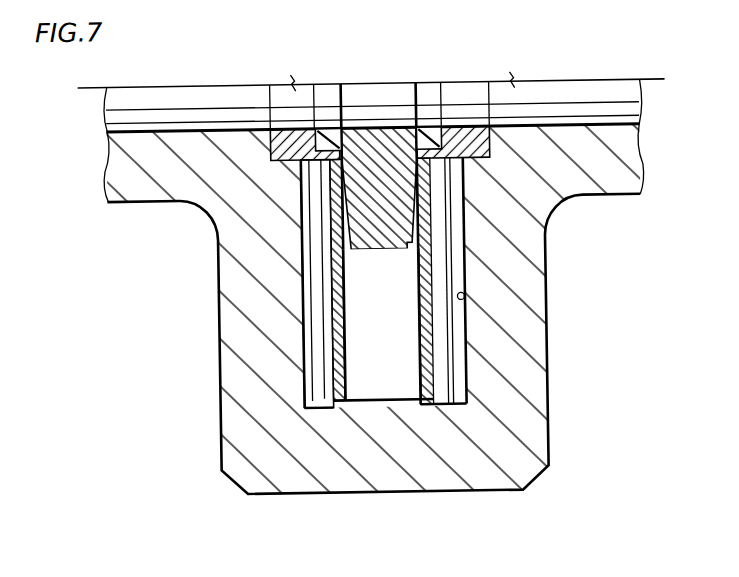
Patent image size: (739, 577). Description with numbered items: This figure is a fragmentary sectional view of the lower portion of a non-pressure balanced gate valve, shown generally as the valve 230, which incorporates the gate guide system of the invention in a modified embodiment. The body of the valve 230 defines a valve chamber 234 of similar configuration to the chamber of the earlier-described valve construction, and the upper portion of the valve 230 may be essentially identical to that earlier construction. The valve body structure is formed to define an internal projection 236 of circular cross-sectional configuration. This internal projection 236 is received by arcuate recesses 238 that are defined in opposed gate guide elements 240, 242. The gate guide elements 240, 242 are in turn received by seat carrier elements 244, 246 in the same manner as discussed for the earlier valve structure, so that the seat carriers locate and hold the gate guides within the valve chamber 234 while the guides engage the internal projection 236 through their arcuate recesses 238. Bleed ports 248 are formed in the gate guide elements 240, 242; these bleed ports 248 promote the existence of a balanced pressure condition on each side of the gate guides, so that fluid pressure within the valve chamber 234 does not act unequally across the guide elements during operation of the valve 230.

The valve 230 is at (560, 375).
The valve chamber 234 is at (468, 302).
The internal projection 236 is at (380, 400).
The arcuate recesses 238 is at (422, 397).
The gate guide element 240 is at (327, 271).
The gate guide element 242 is at (429, 256).
The seat carrier element 244 is at (274, 150).
The seat carrier element 246 is at (496, 150).
The bleed ports 248 is at (340, 300).